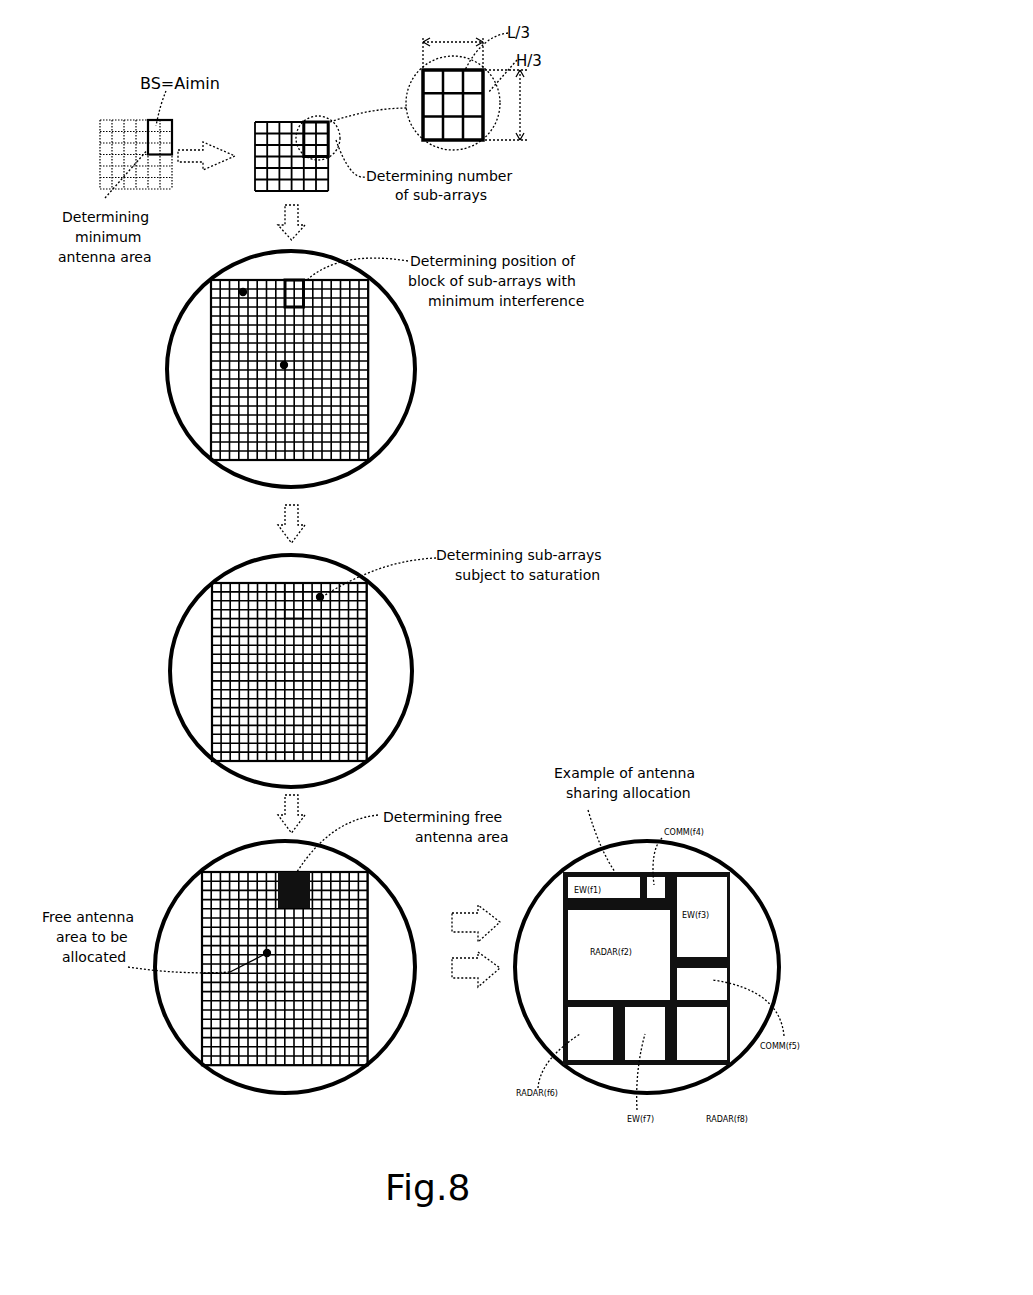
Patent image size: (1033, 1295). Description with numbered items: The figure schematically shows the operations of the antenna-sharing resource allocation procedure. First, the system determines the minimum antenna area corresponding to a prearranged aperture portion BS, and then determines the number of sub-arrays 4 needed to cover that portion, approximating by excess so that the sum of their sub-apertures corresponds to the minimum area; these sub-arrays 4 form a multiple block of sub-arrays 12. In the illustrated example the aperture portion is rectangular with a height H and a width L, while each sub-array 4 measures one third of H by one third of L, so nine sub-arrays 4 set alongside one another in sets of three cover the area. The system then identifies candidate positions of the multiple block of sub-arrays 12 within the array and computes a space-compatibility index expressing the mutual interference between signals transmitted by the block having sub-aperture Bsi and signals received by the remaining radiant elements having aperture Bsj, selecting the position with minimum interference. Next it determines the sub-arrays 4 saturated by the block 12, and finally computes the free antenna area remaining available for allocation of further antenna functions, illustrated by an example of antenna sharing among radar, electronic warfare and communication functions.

The sub-array 4 is at (124, 124).
The multiple block of sub-arrays 12 is at (311, 122).
The width of the aperture portion L is at (453, 45).
The height of the aperture portion H is at (510, 105).
The sub-aperture Bsi is at (243, 292).
The remaining aperture Bsj is at (284, 365).